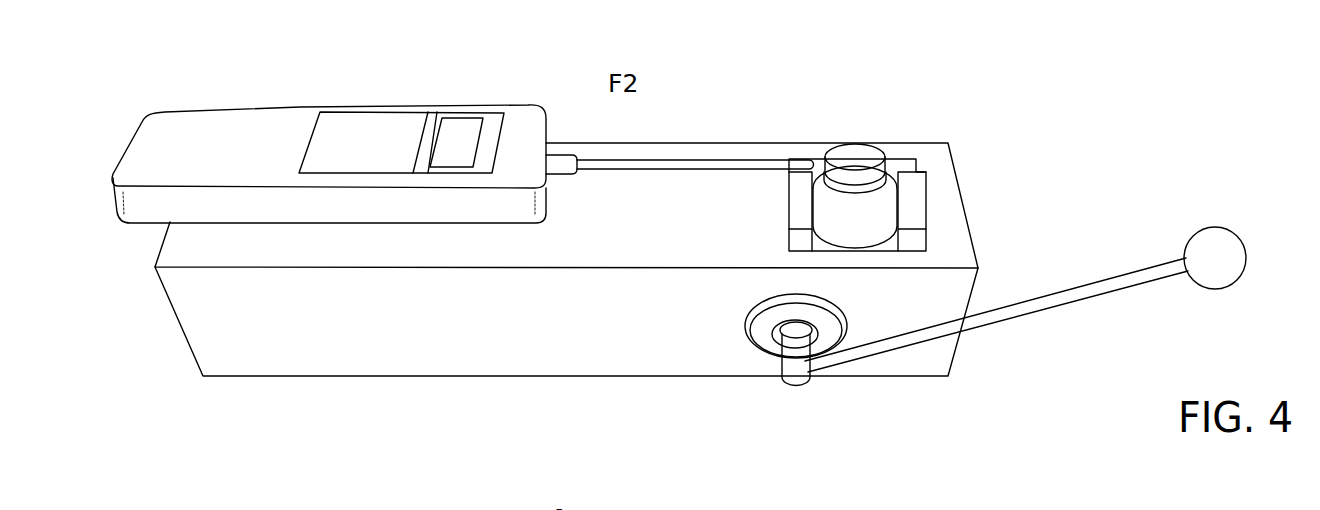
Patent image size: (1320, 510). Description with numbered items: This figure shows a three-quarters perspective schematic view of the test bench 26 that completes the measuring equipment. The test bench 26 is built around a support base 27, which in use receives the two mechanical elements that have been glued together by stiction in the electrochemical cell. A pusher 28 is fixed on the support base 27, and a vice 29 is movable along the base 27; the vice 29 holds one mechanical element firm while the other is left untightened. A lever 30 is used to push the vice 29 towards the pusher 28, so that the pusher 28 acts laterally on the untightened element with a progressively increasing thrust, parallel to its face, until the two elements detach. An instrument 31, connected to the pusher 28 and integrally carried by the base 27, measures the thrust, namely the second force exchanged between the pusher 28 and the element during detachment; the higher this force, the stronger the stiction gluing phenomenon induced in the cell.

The test bench 26 is at (993, 155).
The support base 27 is at (370, 366).
The pusher 28 is at (686, 164).
The vice 29 is at (962, 200).
The lever 30 is at (1103, 285).
The instrument 31 is at (248, 137).